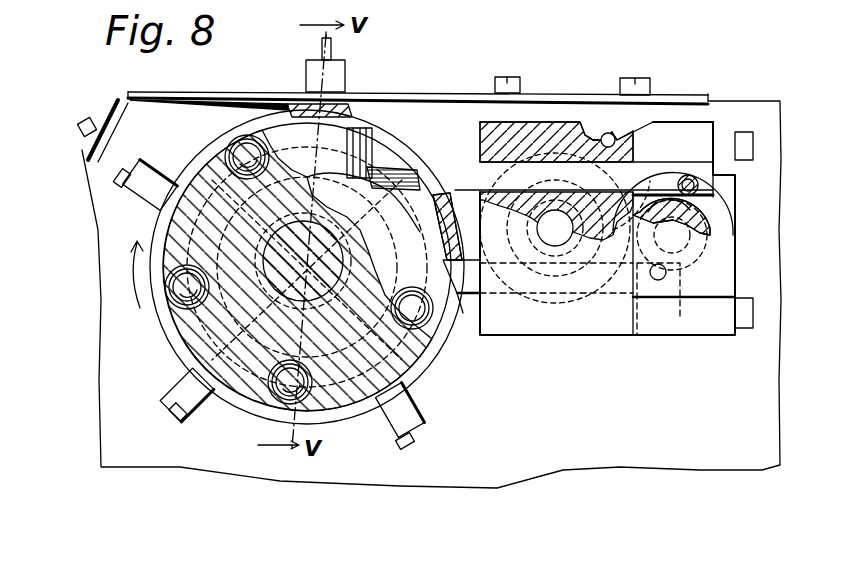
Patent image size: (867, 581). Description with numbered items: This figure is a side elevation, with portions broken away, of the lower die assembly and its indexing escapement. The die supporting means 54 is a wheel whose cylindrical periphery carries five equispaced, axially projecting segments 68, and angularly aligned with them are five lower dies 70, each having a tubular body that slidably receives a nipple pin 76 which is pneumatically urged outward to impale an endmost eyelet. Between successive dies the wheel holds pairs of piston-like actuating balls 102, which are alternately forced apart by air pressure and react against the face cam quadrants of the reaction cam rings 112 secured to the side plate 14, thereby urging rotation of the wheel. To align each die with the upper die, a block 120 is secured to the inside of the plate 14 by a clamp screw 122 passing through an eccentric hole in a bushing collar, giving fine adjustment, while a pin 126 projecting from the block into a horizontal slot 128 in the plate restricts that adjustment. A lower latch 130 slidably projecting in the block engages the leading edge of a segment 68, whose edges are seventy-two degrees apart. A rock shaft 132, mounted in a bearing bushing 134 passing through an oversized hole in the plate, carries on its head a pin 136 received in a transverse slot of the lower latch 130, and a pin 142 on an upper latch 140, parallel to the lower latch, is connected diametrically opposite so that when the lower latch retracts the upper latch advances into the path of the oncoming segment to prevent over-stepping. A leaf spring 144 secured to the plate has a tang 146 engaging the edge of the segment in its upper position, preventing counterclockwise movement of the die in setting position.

The side plate 14 is at (683, 466).
The die supporting means 54 is at (476, 424).
The axially projecting segments 68 is at (350, 112).
The lower dies 70 is at (165, 180).
The nipple pin 76 is at (124, 181).
The actuating balls 102 is at (238, 146).
The reaction cam rings 112 is at (400, 212).
The block 120 is at (576, 336).
The clamp screw 122 is at (548, 262).
The pin 126 is at (612, 136).
The horizontal slot 128 is at (593, 130).
The lower latch 130 is at (456, 300).
The rock shaft 132 is at (728, 258).
The bearing bushing 134 is at (712, 224).
The pin 136 is at (660, 284).
The upper latch 140 is at (478, 180).
The pin 142 is at (690, 175).
The leaf spring 144 is at (130, 92).
The tang 146 is at (275, 103).